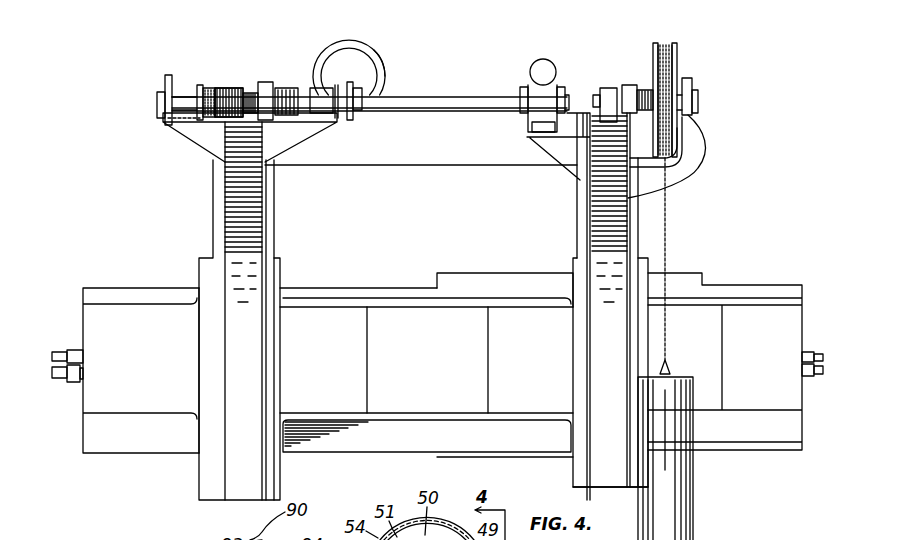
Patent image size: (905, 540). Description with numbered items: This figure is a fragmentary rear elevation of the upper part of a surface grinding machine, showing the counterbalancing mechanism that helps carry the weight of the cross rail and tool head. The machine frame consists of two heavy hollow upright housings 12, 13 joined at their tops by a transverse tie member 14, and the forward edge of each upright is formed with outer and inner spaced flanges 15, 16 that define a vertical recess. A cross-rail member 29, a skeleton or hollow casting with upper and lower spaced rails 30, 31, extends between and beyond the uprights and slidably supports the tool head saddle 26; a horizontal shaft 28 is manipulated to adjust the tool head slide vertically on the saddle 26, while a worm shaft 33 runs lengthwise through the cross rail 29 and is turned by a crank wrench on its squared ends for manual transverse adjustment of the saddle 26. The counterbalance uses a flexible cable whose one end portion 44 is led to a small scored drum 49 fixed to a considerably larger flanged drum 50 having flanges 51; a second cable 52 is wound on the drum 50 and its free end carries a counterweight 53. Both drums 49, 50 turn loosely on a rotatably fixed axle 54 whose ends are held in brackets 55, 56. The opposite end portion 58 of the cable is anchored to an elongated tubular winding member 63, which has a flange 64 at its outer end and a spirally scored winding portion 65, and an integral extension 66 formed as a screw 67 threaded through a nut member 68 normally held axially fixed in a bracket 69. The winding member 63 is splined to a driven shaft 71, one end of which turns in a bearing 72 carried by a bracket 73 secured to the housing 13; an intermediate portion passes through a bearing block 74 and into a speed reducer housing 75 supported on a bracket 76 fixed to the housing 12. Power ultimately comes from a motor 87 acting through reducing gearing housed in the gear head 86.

The upright housing 12 is at (608, 470).
The upright housing 13 is at (248, 473).
The transverse tie member 14 is at (443, 117).
The outer way or flange 15 is at (213, 212).
The inner way or flange 16 is at (276, 218).
The tool head saddle 26 is at (480, 272).
The horizontal shaft 28 is at (60, 352).
The cross-rail member 29 is at (427, 360).
The upper rail 30 is at (378, 288).
The lower rail 31 is at (395, 455).
The worm shaft 33 is at (62, 380).
The end portion of the cable 44 is at (655, 88).
The small scored drum 49 is at (635, 87).
The large drum 50 is at (678, 68).
The drum flange 51 is at (674, 46).
The second cable 52 is at (667, 330).
The counterweight 53 is at (694, 494).
The shaft or axle 54 is at (699, 98).
The bracket 55 is at (700, 178).
The bracket 56 is at (607, 90).
The opposite end portion of the cable 58 is at (203, 92).
The tubular winding member or drum 63 is at (237, 92).
The flange 64 is at (182, 98).
The spirally scored winding portion 65 is at (212, 90).
The extension 66 is at (243, 92).
The worm or screw 67 is at (285, 112).
The nut member 68 is at (255, 95).
The bracket 69 is at (268, 85).
The driven shaft 71 is at (170, 92).
The bearing 72 is at (158, 96).
The bracket 73 is at (182, 128).
The bearing block 74 is at (325, 112).
The speed reducer housing 75 is at (528, 74).
The bracket 76 is at (553, 150).
The gear head 86 is at (313, 64).
The motor 87 is at (370, 58).